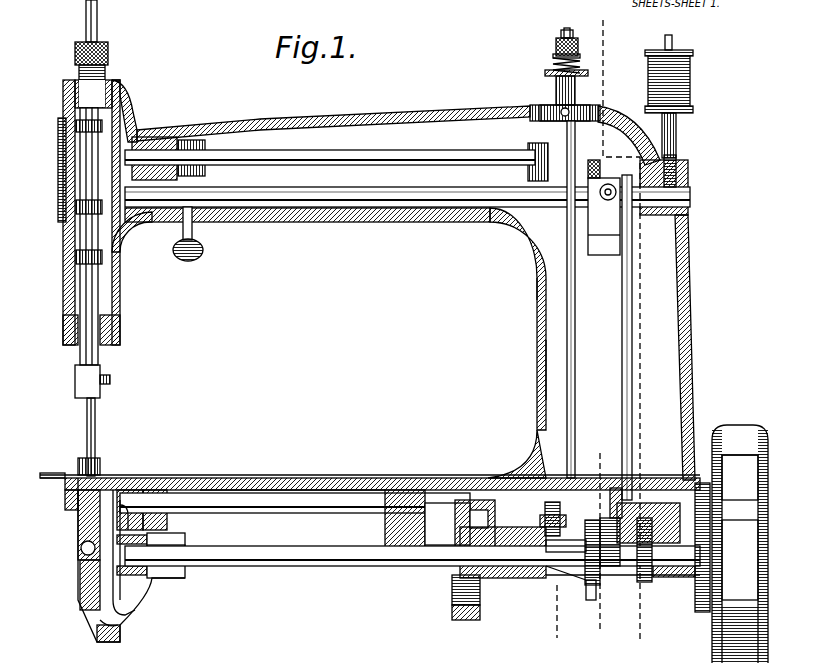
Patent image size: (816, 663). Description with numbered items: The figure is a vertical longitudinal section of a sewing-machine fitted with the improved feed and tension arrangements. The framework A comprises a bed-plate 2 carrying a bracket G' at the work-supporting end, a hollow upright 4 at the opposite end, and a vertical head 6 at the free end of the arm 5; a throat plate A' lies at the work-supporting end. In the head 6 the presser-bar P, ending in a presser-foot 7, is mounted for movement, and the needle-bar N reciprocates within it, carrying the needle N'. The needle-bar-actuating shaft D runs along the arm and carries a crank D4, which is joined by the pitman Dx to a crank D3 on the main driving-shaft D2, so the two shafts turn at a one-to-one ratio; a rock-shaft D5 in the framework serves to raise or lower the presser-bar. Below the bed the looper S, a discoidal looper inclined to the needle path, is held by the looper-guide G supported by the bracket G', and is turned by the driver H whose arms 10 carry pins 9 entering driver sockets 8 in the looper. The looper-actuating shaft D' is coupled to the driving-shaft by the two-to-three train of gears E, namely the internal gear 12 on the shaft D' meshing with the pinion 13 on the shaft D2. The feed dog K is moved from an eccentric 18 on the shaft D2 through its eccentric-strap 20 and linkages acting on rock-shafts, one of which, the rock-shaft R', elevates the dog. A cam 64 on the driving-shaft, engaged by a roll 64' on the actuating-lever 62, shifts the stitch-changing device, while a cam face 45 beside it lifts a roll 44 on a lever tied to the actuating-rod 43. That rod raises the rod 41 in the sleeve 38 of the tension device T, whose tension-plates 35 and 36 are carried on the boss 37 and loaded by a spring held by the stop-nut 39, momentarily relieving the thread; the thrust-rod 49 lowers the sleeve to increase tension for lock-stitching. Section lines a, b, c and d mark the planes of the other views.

The bed-plate 2 is at (330, 486).
The hollow upright 4 is at (537, 364).
The arm 5 is at (325, 130).
The vertical head 6 is at (75, 266).
The presser-foot 7 is at (97, 470).
The driver sockets 8 is at (112, 616).
The pins 9 is at (118, 500).
The arms 10 is at (160, 490).
The internal gear 12 is at (462, 620).
The pinion 13 is at (462, 500).
The eccentric 18 is at (604, 516).
The eccentric-strap 20 is at (591, 585).
The tension-plate 35 is at (556, 85).
The tension-plate 36 is at (586, 70).
The boss 37 is at (578, 92).
The sleeve 38 is at (576, 42).
The stop-nut 39 is at (560, 50).
The rod 41 is at (565, 36).
The actuating-rod 43 is at (575, 320).
The roll 44 is at (612, 518).
The cam face 45 is at (590, 600).
The thrust-rod 49 is at (537, 290).
The actuating-lever 62 is at (550, 500).
The cam 64 is at (555, 578).
The roll 64' is at (514, 452).
The framework A is at (292, 469).
The throat plate A' is at (46, 464).
The needle-bar-actuating shaft D is at (407, 295).
The looper-actuating shaft D' is at (412, 573).
The main driving-shaft D2 is at (672, 577).
The crank D3 is at (645, 503).
The crank D4 is at (682, 170).
The rock-shaft D5 is at (444, 166).
The pitman Dx is at (632, 352).
The train of gears E is at (480, 610).
The looper-guide G is at (131, 569).
The bracket G' is at (158, 534).
The driver H is at (122, 600).
The feed dog K is at (66, 505).
The needle-bar N is at (110, 236).
The needle N' is at (70, 437).
The presser-bar P is at (102, 388).
The rock-shaft R' is at (295, 515).
The looper S is at (82, 578).
The tension device T is at (551, 89).
The section line a— a is at (752, 515).
The section line b— b is at (555, 622).
The section line c— c is at (624, 331).
The section line d— d is at (598, 544).